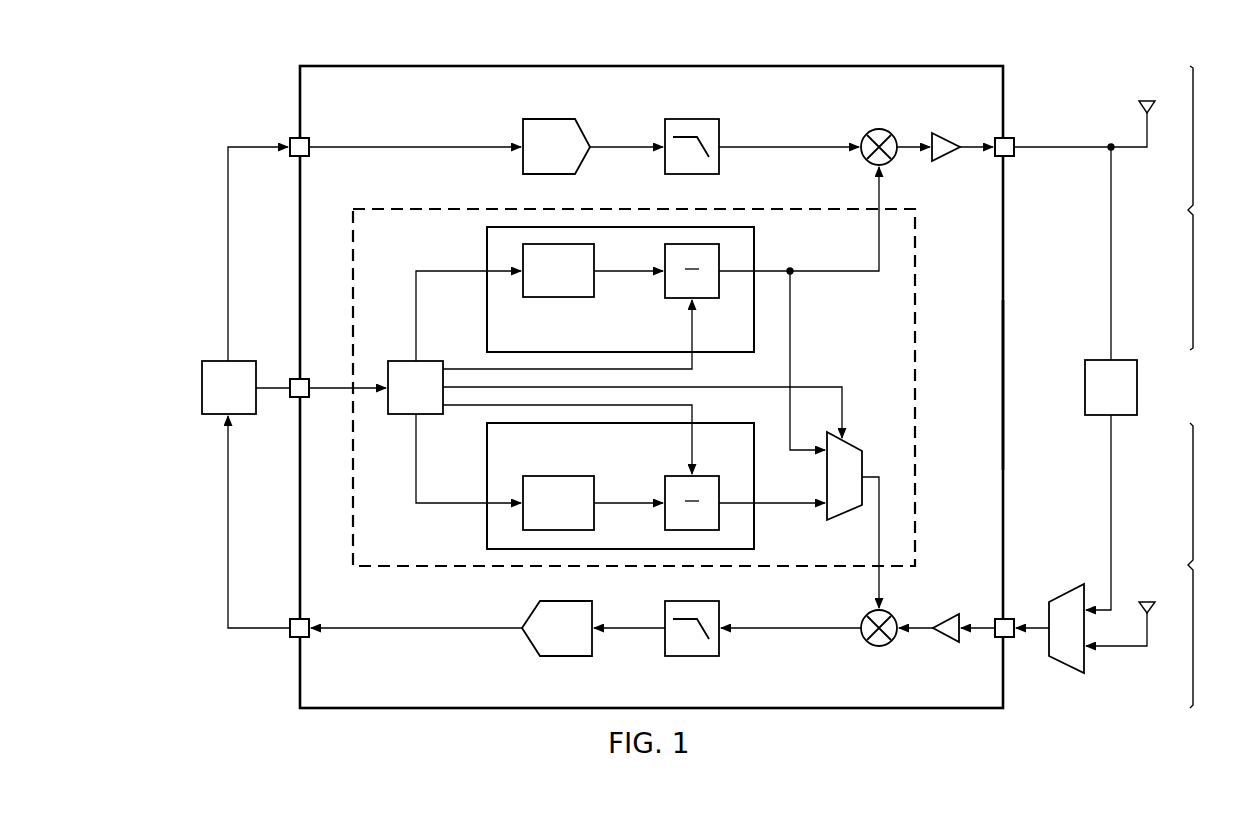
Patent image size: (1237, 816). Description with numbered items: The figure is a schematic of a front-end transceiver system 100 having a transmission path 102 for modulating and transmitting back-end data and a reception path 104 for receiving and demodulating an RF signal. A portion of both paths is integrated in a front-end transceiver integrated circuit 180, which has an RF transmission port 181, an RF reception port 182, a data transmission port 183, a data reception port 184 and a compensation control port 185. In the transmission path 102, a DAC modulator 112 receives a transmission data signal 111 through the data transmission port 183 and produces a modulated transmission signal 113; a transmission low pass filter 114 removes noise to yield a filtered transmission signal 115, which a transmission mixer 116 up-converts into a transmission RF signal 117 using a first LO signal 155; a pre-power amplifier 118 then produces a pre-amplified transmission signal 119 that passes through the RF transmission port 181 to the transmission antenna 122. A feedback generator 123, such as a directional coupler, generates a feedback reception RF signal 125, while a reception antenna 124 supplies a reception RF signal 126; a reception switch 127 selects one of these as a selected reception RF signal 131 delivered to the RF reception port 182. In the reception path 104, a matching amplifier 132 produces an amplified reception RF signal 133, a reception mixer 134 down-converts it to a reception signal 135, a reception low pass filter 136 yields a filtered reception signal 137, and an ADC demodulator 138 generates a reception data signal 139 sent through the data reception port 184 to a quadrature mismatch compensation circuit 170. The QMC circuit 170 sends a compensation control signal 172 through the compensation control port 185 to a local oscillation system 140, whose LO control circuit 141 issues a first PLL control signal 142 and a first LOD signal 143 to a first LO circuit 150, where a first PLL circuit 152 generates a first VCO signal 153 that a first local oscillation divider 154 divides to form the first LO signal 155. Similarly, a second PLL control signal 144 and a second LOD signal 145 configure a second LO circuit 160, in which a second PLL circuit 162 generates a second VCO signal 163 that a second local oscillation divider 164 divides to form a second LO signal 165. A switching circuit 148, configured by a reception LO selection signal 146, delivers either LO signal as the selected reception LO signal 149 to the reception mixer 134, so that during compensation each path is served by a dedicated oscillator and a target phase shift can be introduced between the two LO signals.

The front-end transceiver system 100 is at (218, 92).
The transmission path 102 is at (1212, 208).
The reception path 104 is at (1212, 565).
The transmission data signal 111 is at (416, 145).
The digital-to-analog conversion modulator 112 is at (552, 118).
The modulated transmission signal 113 is at (630, 145).
The transmission low pass filter 114 is at (692, 118).
The filtered transmission signal 115 is at (806, 145).
The transmission mixer 116 is at (893, 133).
The transmission RF signal 117 is at (908, 150).
The pre-power amplifier 118 is at (950, 138).
The pre-amplified transmission signal 119 is at (970, 150).
The transmission antenna 122 is at (1148, 100).
The feedback generator 123 is at (1111, 281).
The reception antenna 124 is at (1148, 601).
The feedback reception RF signal 125 is at (1113, 514).
The reception RF signal 126 is at (1118, 650).
The reception switch 127 is at (1066, 596).
The selected reception RF signal 131 is at (976, 624).
The matching amplifier 132 is at (944, 640).
The amplified reception RF signal 133 is at (914, 624).
The reception mixer 134 is at (870, 644).
The reception signal 135 is at (790, 634).
The reception low pass filter 136 is at (692, 658).
The filtered reception signal 137 is at (630, 634).
The analog-to-digital demodulator 138 is at (570, 658).
The reception data signal 139 is at (414, 634).
The local oscillation system 140 is at (917, 387).
The LO control circuit 141 is at (415, 387).
The first PLL control signal 142 is at (450, 270).
The first LOD signal 143 is at (466, 367).
The second PLL control signal 144 is at (450, 506).
The second LOD signal 145 is at (468, 408).
The reception LO selection signal 146 is at (835, 384).
The switching circuit 148 is at (864, 448).
The selected reception LO signal 149 is at (878, 596).
The first LO circuit 150 is at (757, 248).
The first phase lock loop circuit 152 is at (560, 299).
The first VCO signal 153 is at (630, 274).
The first local oscillation divider 154 is at (706, 300).
The first LO signal 155 is at (834, 274).
The second LO circuit 160 is at (757, 524).
The second PLL circuit 162 is at (555, 474).
The second VCO signal 163 is at (628, 500).
The second local oscillation divider 164 is at (709, 474).
The second LO signal 165 is at (795, 500).
The quadrature mismatch compensation circuit 170 is at (246, 387).
The compensation control signal 172 is at (334, 384).
The front-end transceiver integrated circuit 180 is at (1006, 387).
The RF transmission port 181 is at (1012, 137).
The RF reception port 182 is at (1010, 640).
The data transmission port 183 is at (290, 137).
The data reception port 184 is at (298, 640).
The compensation control port 185 is at (298, 399).